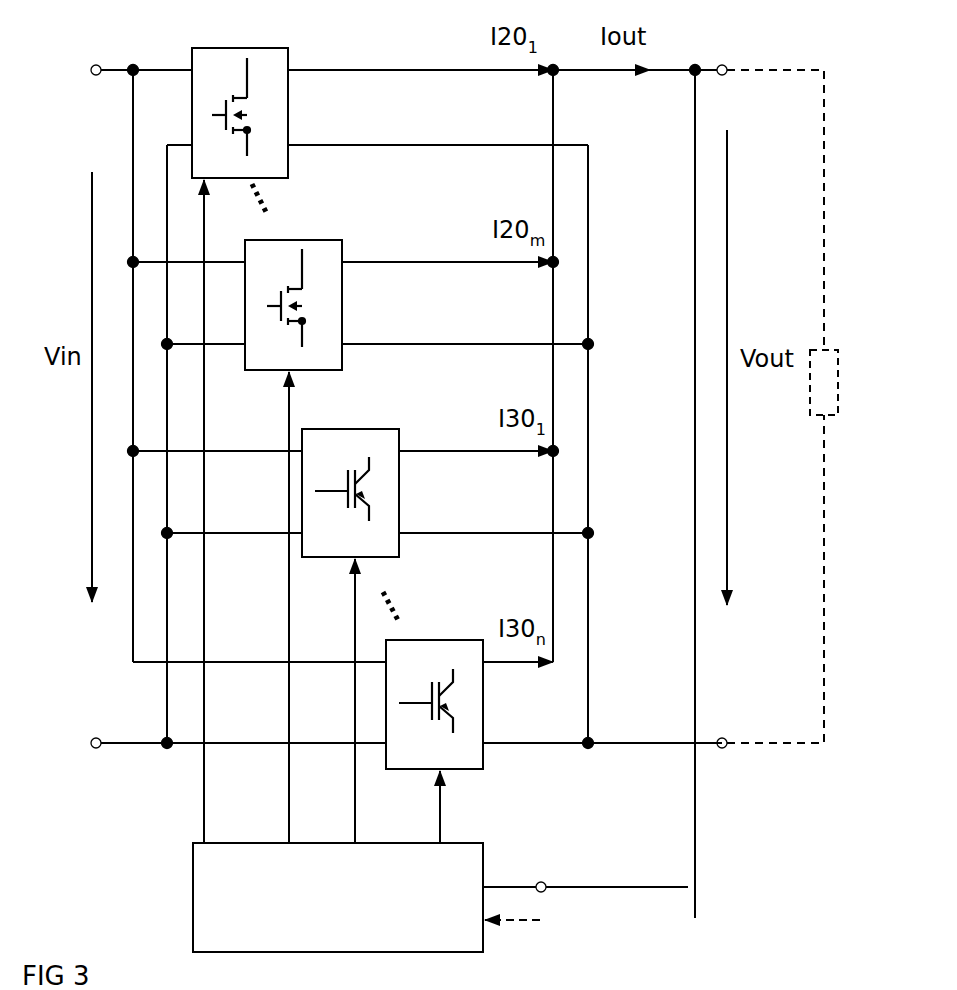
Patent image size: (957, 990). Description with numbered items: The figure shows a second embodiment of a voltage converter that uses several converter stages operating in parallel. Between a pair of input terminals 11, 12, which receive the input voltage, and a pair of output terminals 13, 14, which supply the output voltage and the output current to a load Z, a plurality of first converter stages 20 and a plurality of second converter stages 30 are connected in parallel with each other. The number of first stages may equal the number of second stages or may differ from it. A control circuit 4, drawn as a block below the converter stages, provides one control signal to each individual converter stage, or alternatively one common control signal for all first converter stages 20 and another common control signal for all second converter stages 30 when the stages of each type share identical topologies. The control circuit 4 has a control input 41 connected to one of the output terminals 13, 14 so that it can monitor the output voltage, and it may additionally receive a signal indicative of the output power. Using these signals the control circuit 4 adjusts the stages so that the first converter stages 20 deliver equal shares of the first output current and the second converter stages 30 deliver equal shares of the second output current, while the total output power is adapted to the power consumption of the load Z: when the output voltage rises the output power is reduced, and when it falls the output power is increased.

The input terminal 11 is at (95, 62).
The input terminal 12 is at (94, 735).
The output terminal 13 is at (723, 62).
The output terminal 14 is at (723, 735).
The first converter stage 20 is at (250, 48).
The second converter stage 30 is at (362, 427).
The control circuit 4 is at (340, 843).
The control input 41 is at (543, 879).
The load Z is at (843, 378).